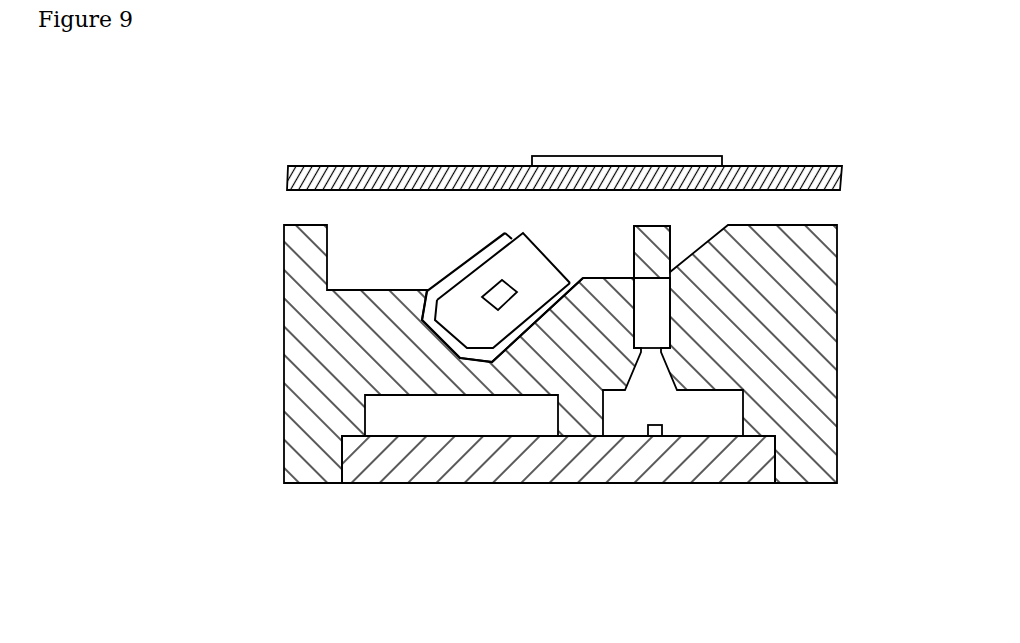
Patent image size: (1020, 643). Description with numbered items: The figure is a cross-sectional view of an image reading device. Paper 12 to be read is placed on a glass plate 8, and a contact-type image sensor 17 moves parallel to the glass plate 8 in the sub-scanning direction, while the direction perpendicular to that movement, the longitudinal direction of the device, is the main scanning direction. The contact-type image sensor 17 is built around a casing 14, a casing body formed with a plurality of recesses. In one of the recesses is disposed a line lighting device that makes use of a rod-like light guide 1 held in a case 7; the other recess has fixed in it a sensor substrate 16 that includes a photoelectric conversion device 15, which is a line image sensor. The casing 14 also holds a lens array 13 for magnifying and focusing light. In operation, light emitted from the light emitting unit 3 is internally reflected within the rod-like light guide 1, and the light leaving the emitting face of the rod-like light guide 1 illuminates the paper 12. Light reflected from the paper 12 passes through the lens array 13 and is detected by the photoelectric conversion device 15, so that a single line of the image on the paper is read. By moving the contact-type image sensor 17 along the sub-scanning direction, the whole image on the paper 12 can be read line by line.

The rod-like light guide 1 is at (537, 261).
The light emitting unit 3 is at (500, 298).
The case 7 is at (464, 268).
The glass plate 8 is at (438, 165).
The paper 12 is at (639, 156).
The lens array 13 is at (641, 253).
The casing 14 is at (826, 351).
The photoelectric conversion device 15 is at (655, 437).
The sensor substrate 16 is at (460, 484).
The contact-type image sensor 17 is at (604, 377).